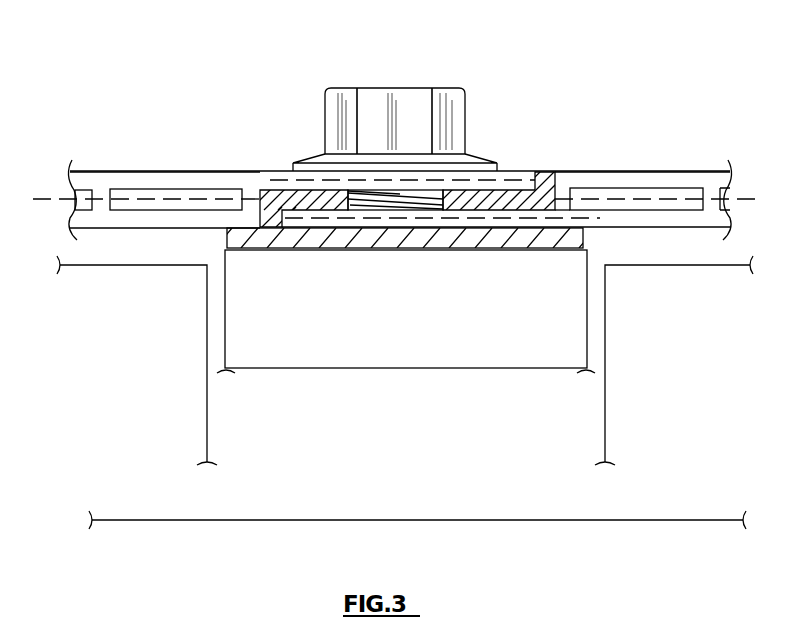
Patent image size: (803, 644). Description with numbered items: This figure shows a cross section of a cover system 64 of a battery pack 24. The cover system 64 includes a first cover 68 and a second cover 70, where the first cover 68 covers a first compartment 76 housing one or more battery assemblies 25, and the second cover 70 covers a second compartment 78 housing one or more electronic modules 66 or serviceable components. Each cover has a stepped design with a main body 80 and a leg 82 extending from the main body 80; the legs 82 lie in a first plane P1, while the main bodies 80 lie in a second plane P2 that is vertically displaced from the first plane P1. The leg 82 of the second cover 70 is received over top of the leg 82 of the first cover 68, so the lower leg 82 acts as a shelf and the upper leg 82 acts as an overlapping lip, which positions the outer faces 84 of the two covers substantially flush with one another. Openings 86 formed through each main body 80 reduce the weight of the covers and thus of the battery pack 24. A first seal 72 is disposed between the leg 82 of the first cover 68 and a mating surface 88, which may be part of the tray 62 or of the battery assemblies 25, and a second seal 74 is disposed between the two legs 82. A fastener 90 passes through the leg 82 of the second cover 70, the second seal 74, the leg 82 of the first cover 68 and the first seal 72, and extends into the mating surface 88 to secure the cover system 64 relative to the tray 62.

The battery pack 24 is at (583, 74).
The fastener 90 is at (440, 98).
The cover system 64 is at (222, 140).
The first cover 68 is at (677, 180).
The outer faces 84 is at (98, 172).
The main body 80 is at (180, 185).
The openings 86 is at (78, 199).
The second cover 70 is at (147, 180).
The second compartment 78 is at (128, 256).
The first compartment 76 is at (663, 258).
The second seal 74 is at (477, 197).
The leg 82 is at (289, 182).
The first plane P1 is at (507, 182).
The second plane P2 is at (167, 200).
The first seal 72 is at (328, 240).
The mating surface 88 is at (417, 345).
The electronic modules 66 is at (152, 360).
The battery assemblies 25 is at (691, 360).
The tray 62 is at (290, 520).